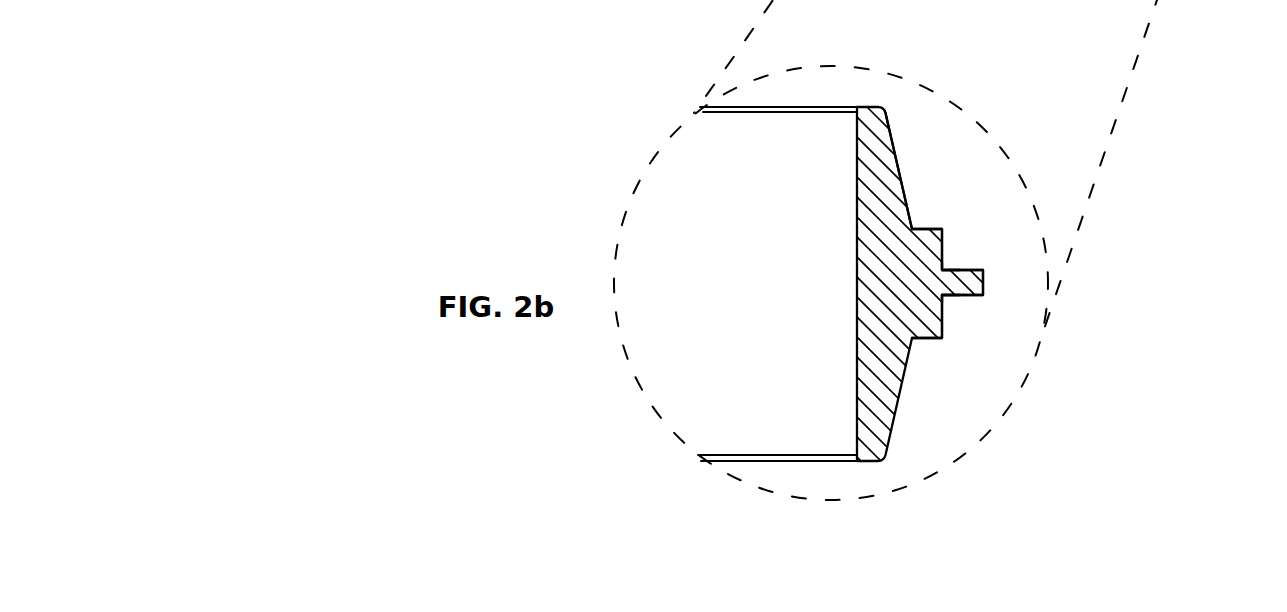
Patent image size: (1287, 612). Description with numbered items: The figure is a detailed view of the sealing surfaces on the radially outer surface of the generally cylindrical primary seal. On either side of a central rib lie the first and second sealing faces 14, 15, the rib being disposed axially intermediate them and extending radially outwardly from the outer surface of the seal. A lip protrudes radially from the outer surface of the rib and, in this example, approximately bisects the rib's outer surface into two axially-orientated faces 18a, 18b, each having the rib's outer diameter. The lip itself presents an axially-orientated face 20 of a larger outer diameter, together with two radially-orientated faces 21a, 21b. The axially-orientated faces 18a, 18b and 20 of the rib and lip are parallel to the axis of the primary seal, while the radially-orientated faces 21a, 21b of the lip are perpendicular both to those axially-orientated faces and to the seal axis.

The first sealing face 14 is at (897, 417).
The second sealing face 15 is at (895, 152).
The axially-orientated face 18a is at (942, 245).
The axially-orientated face 18b is at (942, 327).
The axially-orientated face 20 is at (983, 281).
The radially-orientated face 21a is at (965, 267).
The radially-orientated face 21b is at (955, 296).